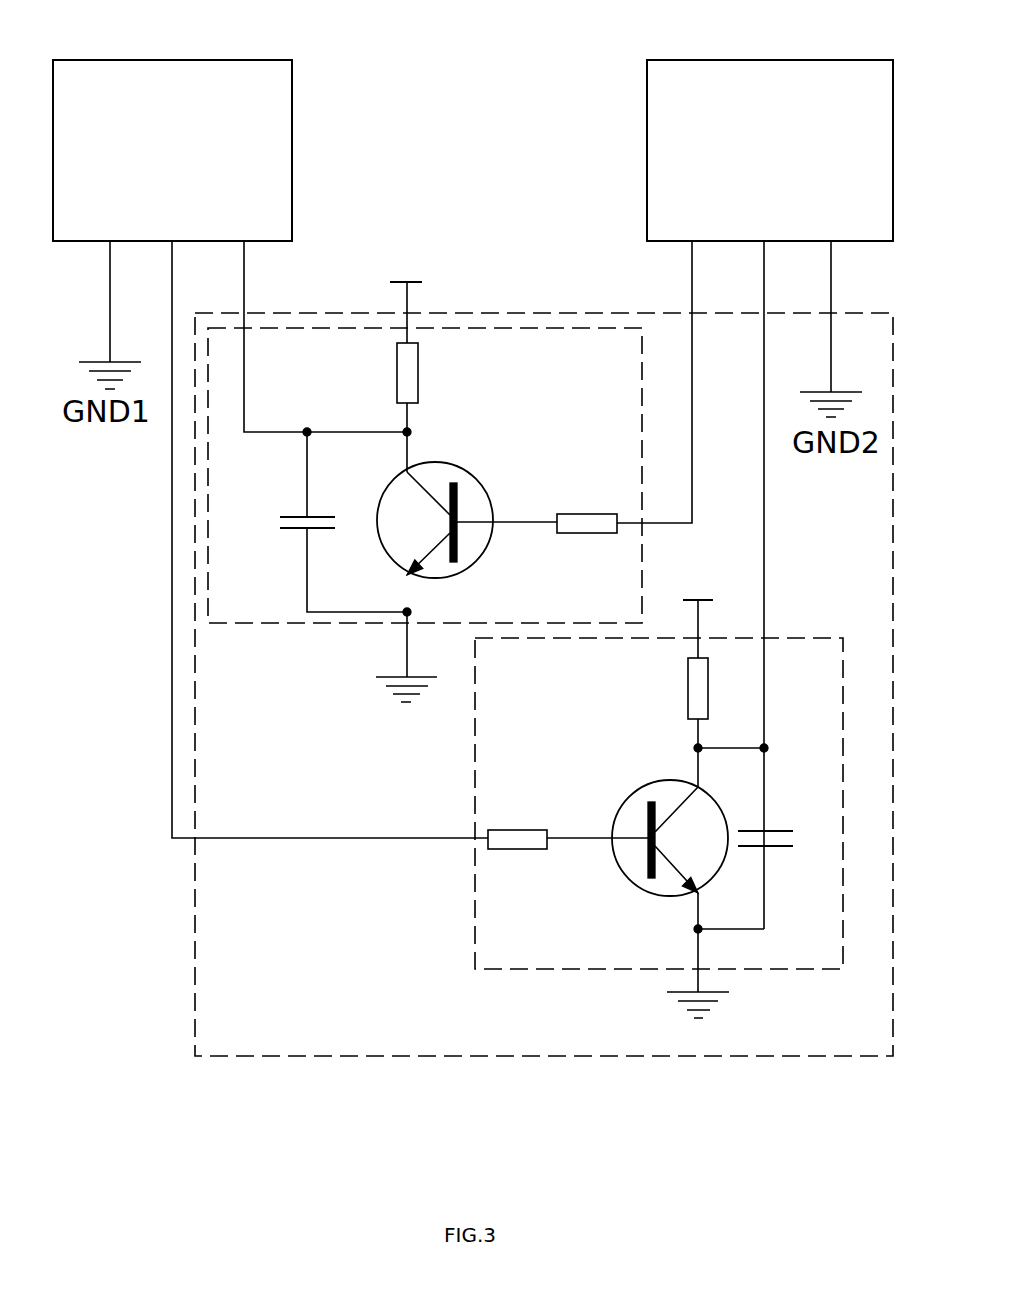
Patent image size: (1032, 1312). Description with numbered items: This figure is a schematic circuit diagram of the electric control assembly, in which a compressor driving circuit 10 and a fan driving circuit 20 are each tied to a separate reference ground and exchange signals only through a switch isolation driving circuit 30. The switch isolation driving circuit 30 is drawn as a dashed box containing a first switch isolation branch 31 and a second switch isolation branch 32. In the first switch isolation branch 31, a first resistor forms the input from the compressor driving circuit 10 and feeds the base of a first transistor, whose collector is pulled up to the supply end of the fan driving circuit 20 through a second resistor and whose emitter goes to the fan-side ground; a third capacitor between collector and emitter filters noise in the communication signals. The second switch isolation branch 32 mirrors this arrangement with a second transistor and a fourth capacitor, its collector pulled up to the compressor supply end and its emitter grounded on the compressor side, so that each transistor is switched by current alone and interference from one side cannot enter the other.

The compressor driving circuit 10 is at (133, 60).
The fan driving circuit 20 is at (720, 60).
The switch isolation driving circuit 30 is at (480, 313).
The first switch isolation branch 31 is at (777, 638).
The second switch isolation branch 32 is at (583, 328).